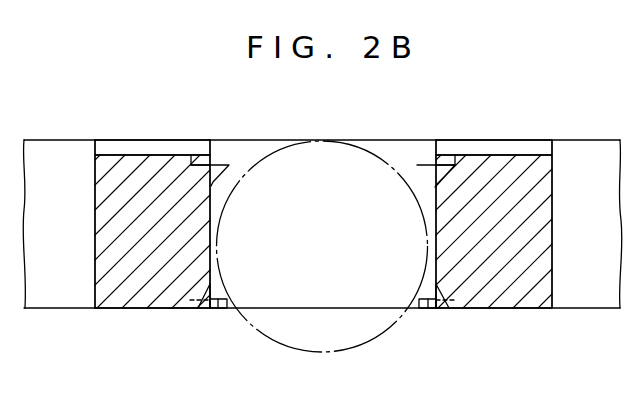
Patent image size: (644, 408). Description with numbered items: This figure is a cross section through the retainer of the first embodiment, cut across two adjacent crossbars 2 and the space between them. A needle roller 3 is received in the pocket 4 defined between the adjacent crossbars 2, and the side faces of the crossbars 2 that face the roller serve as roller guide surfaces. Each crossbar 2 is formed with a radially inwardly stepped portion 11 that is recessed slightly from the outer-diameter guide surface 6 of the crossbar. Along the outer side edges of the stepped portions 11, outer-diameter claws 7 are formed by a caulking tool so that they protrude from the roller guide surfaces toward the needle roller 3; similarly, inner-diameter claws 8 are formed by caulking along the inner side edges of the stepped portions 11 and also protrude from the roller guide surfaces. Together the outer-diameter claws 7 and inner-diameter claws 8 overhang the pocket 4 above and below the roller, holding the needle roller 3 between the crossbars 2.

The crossbar portion 2 is at (141, 302).
The needle roller 3 is at (283, 148).
The pocket 4 is at (248, 146).
The outer-diameter guide surface 6 is at (591, 140).
The outer-diameter claw 7 is at (223, 160).
The inner-diameter claw 8 is at (217, 306).
The stepped portion 11 is at (143, 152).